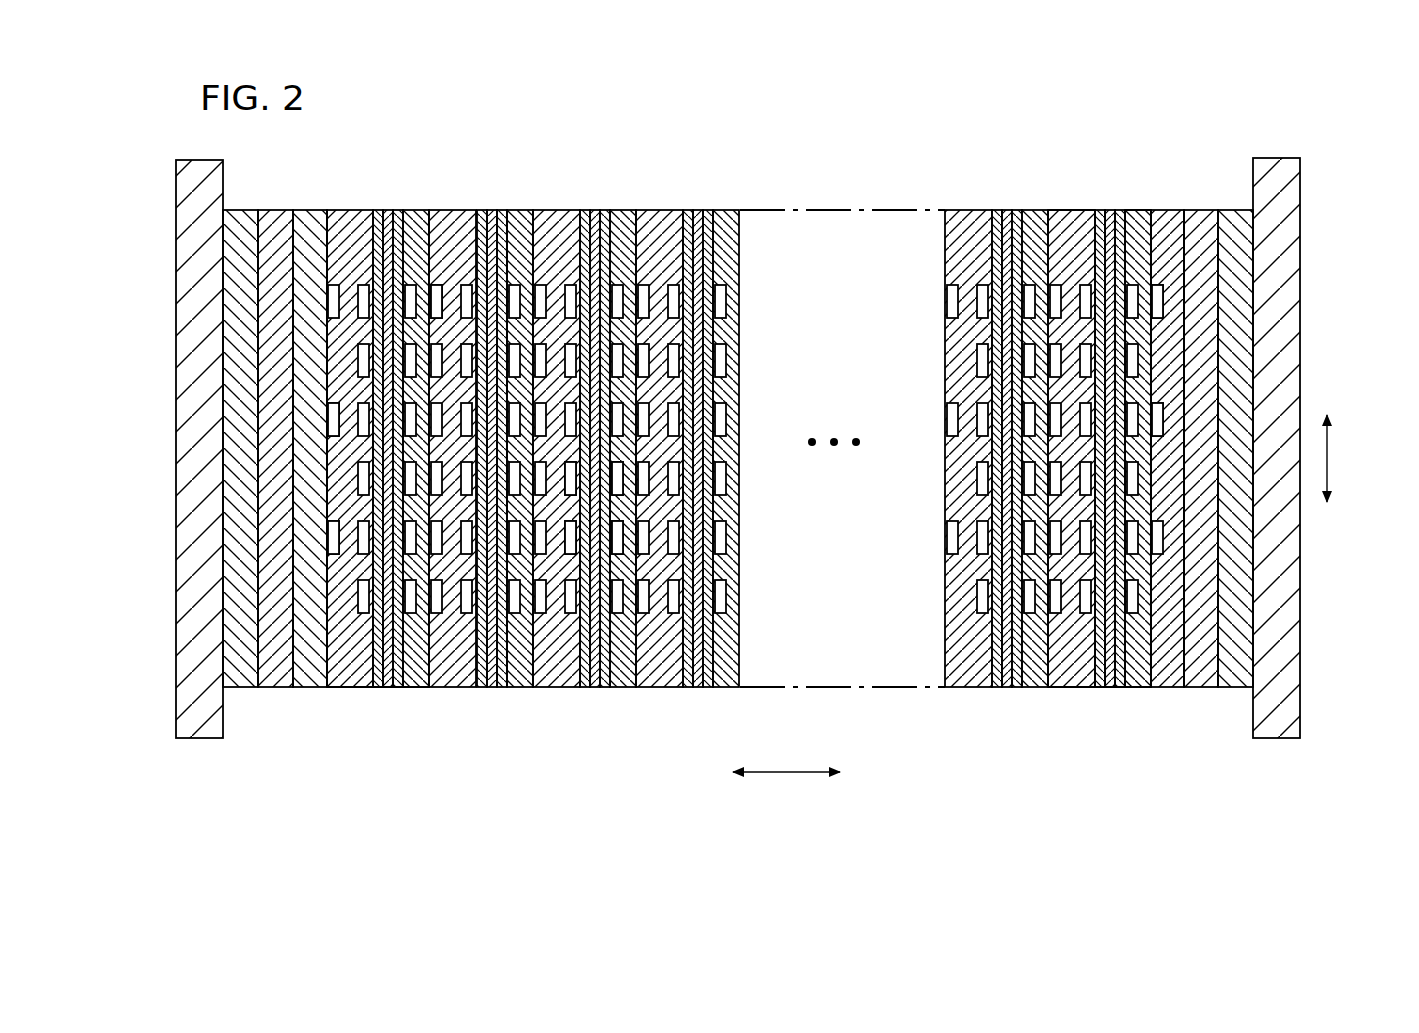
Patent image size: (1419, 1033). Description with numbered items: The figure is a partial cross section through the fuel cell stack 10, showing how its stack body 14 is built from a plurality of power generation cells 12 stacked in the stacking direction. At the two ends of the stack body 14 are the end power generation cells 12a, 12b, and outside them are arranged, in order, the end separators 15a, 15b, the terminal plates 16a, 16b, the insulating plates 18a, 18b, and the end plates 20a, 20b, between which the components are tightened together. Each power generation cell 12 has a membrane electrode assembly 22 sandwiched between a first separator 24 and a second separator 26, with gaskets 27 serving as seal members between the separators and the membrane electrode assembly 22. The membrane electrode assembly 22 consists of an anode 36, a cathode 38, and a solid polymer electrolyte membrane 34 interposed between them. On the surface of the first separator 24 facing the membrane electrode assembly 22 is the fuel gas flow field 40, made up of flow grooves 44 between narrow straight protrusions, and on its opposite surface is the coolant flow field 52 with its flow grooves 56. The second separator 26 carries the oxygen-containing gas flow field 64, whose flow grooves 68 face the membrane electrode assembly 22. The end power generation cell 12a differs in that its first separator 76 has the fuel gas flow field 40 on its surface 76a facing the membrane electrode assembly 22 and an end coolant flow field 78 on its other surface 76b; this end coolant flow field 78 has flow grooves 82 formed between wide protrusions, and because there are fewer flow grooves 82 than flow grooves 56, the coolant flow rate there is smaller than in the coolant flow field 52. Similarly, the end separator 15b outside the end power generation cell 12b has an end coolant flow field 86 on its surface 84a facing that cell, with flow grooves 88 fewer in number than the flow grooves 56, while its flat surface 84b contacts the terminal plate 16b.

The fuel cell stack 10 is at (445, 90).
The power generation cell 12 is at (647, 140).
The end power generation cell 12a is at (253, 486).
The end power generation cell 12b is at (1170, 757).
The stack body 14 is at (733, 100).
The end separator 15a is at (306, 235).
The end separator 15b is at (1273, 412).
The terminal plate 16a is at (262, 225).
The terminal plate 16b is at (1200, 240).
The insulating plate 18a is at (237, 233).
The insulating plate 18b is at (1233, 237).
The end plate 20a is at (196, 186).
The end plate 20b is at (1270, 193).
The membrane electrode assembly 22 is at (749, 451).
The first separator 24 is at (741, 445).
The second separator 26 is at (783, 460).
The gasket 27 is at (1071, 218).
The solid polymer electrolyte membrane 34 is at (697, 533).
The anode 36 is at (688, 514).
The cathode 38 is at (792, 510).
The fuel gas flow field 40 is at (571, 542).
The flow groove 44 is at (571, 598).
The coolant flow field 52 is at (481, 250).
The flow groove 56 is at (437, 292).
The oxygen-containing gas flow field 64 is at (616, 542).
The flow groove 68 is at (617, 598).
The first separator 76 is at (229, 465).
The surface 76a is at (383, 235).
The surface 76b is at (325, 263).
The end coolant flow field 78 is at (326, 538).
The flow groove 82 is at (327, 418).
The surface 84a is at (1138, 590).
The flat surface 84b is at (1185, 617).
The end coolant flow field 86 is at (1168, 295).
The flow groove 88 is at (1158, 412).